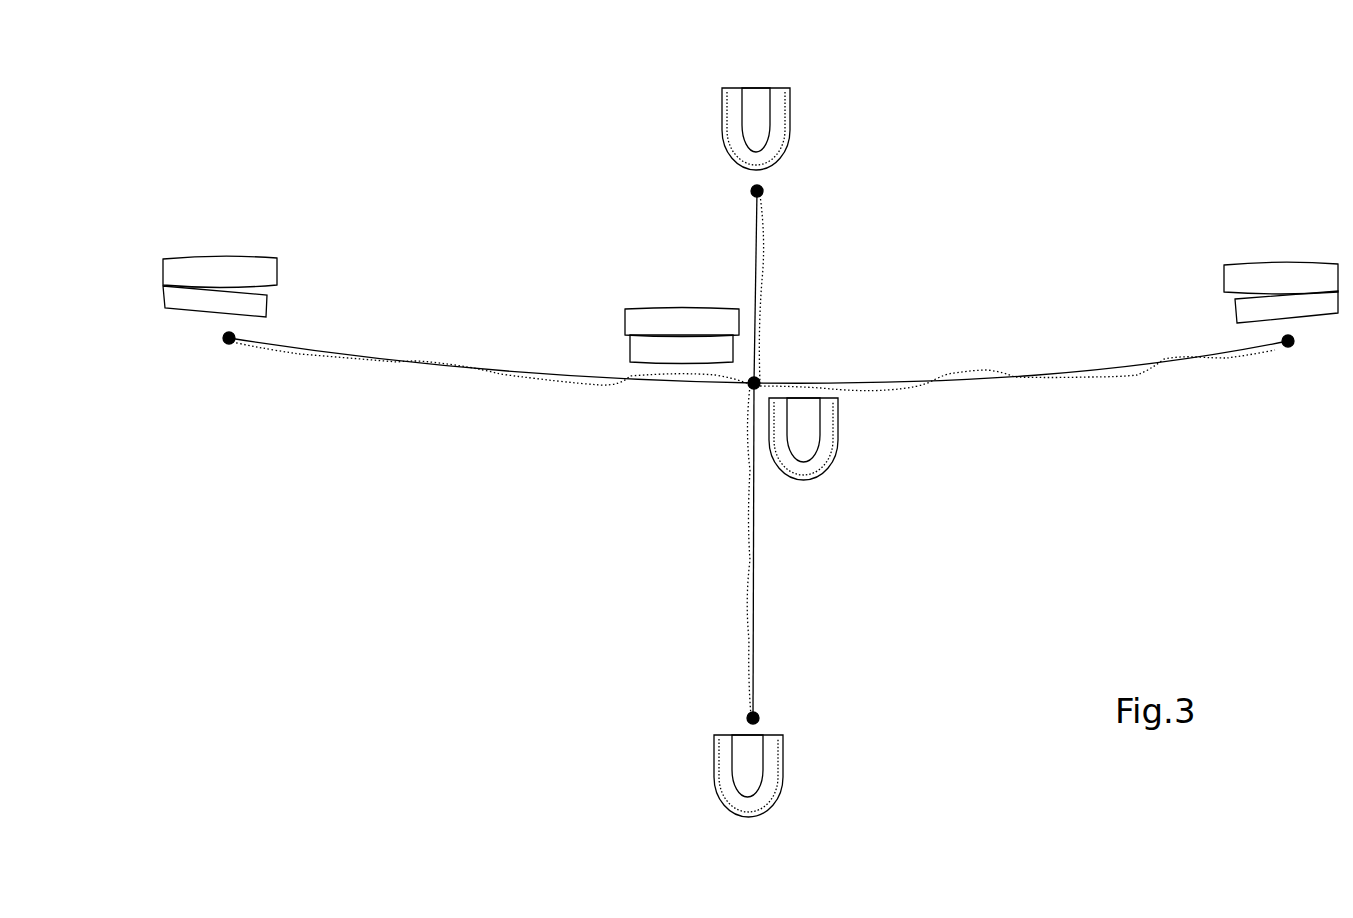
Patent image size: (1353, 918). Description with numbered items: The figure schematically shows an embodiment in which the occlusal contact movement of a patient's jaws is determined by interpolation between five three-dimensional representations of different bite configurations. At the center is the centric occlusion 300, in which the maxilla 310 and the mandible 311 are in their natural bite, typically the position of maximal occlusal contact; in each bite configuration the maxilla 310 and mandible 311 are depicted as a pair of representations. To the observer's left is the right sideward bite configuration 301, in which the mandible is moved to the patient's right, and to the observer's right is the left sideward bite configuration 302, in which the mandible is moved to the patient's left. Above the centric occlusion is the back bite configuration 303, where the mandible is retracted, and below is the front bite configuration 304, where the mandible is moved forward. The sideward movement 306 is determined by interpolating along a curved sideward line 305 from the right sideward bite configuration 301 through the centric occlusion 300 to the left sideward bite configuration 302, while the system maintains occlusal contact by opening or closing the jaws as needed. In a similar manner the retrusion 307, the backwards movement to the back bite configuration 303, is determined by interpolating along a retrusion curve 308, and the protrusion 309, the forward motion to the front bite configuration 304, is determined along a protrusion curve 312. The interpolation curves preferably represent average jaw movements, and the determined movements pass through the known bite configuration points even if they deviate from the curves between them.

The centric occlusion 300 is at (722, 300).
The right sideward bite configuration 301 is at (214, 248).
The left sideward bite configuration 302 is at (1288, 255).
The back bite configuration 303 is at (805, 78).
The front bite configuration 304 is at (797, 773).
The curved sideward line 305 is at (423, 368).
The sideward movement 306 is at (592, 383).
The retrusion 307 is at (760, 265).
The retrusion curve 308 is at (757, 257).
The protrusion 309 is at (742, 610).
The maxilla 310 is at (737, 160).
The mandible 311 is at (730, 88).
The protrusion curve 312 is at (753, 620).